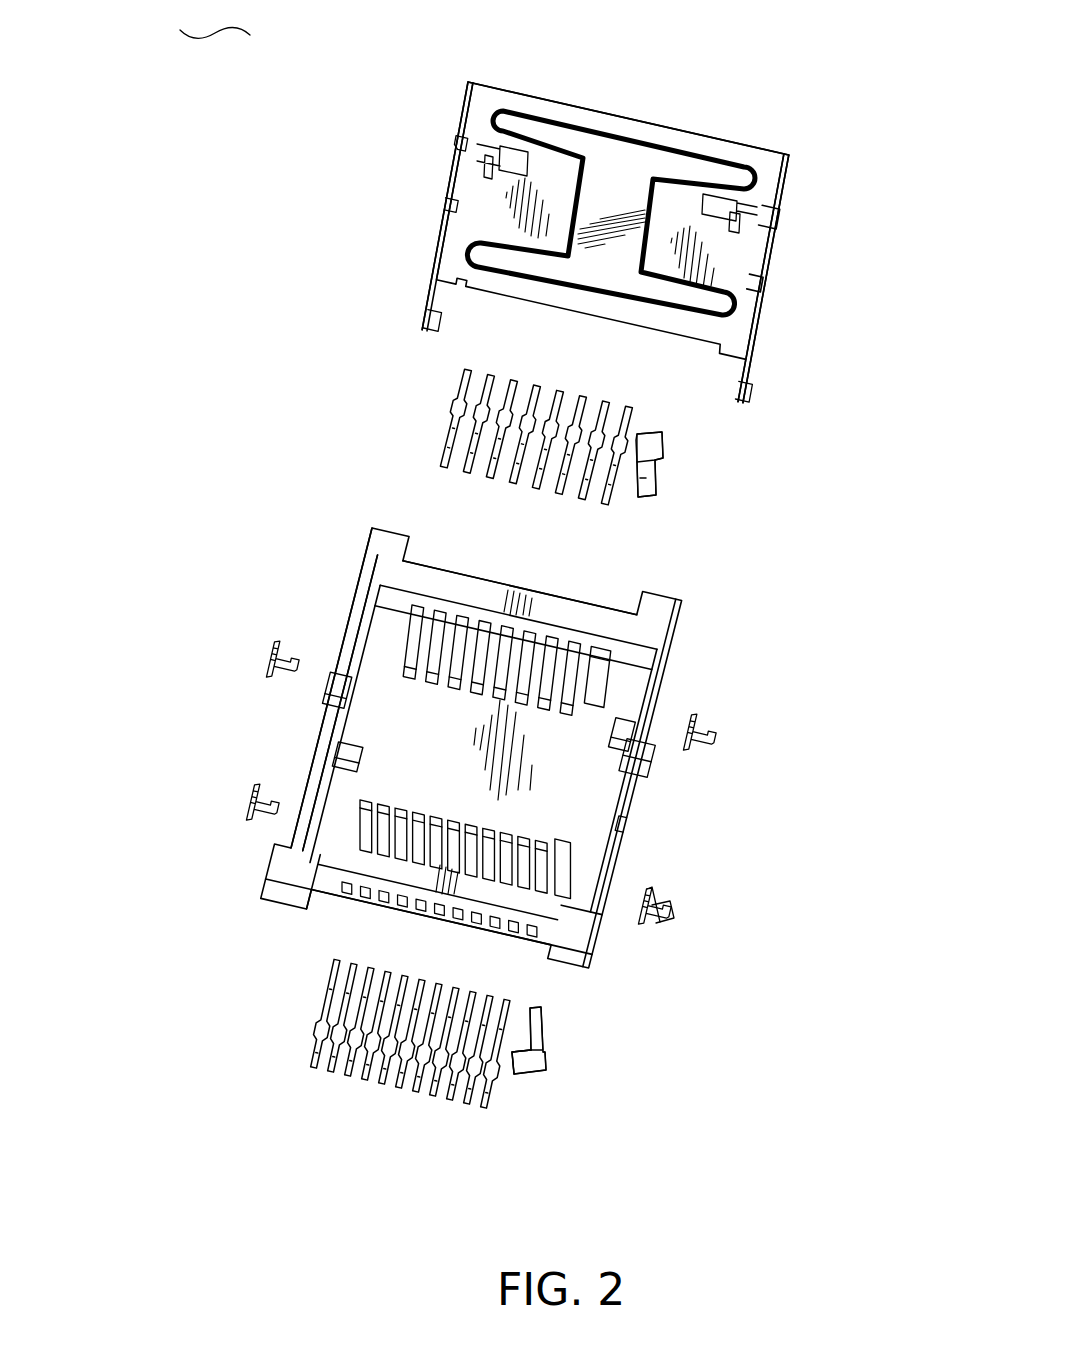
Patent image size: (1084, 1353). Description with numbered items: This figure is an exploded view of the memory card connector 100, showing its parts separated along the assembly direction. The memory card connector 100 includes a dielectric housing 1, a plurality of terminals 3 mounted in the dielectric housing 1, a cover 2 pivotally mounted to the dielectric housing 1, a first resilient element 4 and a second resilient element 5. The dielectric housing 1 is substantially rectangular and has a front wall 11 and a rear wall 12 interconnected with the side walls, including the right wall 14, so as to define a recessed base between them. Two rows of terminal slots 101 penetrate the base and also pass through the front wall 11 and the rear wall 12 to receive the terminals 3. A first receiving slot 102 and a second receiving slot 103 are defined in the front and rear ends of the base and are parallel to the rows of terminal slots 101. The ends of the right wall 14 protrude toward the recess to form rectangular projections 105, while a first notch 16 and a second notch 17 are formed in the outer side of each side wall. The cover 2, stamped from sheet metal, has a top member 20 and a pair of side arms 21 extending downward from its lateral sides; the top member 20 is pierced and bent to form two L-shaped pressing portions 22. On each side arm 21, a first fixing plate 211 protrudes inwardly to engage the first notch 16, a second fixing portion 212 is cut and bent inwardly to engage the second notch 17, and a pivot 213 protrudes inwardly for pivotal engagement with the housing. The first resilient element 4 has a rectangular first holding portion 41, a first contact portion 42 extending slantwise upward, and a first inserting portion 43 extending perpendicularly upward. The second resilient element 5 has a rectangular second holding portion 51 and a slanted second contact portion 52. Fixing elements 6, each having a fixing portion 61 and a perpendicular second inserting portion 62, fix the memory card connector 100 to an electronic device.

The memory card connector 100 is at (215, 19).
The dielectric housing 1 is at (344, 546).
The cover 2 is at (538, 78).
The terminals 3 is at (428, 437).
The first resilient element 4 is at (551, 1085).
The second resilient element 5 is at (666, 422).
The fixing elements 6 is at (675, 940).
The front wall 11 is at (380, 880).
The rear wall 12 is at (630, 650).
The right wall 14 is at (315, 815).
The first notch 16 is at (642, 768).
The second notch 17 is at (626, 838).
The top member 20 is at (690, 140).
The side arms 21 is at (445, 270).
The pressing portions 22 is at (762, 222).
The first holding portion 41 is at (521, 1076).
The first contact portion 42 is at (545, 1015).
The first inserting portion 43 is at (546, 1062).
The second holding portion 51 is at (665, 447).
The second contact portion 52 is at (646, 490).
The fixing portion 61 is at (672, 918).
The second inserting portion 62 is at (656, 888).
The terminal slots 101 is at (432, 630).
The first receiving slot 102 is at (575, 880).
The second receiving slot 103 is at (597, 655).
The projection 105 is at (368, 658).
The first fixing plate 211 is at (450, 212).
The second fixing portion 212 is at (460, 150).
The pivot 213 is at (432, 335).